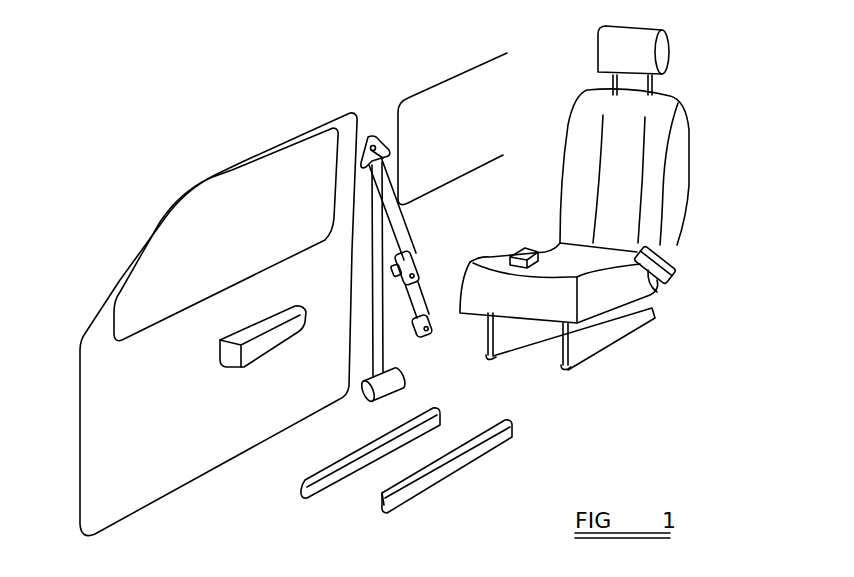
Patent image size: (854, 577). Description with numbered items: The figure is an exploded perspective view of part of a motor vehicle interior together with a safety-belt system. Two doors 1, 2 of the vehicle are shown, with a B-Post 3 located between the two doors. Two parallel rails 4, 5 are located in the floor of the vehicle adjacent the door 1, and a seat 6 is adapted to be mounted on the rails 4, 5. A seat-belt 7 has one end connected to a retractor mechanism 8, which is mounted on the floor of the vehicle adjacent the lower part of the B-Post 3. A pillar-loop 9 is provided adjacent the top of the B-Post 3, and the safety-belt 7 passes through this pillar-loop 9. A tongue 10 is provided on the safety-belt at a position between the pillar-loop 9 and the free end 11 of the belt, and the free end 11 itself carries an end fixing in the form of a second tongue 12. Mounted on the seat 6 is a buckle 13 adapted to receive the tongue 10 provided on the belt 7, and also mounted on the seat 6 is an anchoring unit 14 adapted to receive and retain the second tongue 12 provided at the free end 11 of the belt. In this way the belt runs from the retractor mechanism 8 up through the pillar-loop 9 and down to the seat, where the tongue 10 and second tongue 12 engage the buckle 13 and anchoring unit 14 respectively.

The door 1 is at (130, 415).
The door 2 is at (488, 188).
The B-Post 3 is at (374, 133).
The rail 4 is at (335, 478).
The rail 5 is at (432, 478).
The seat 6 is at (698, 244).
The seat-belt 7 is at (378, 320).
The retractor mechanism 8 is at (379, 399).
The pillar-loop 9 is at (385, 145).
The tongue 10 is at (418, 257).
The free end 11 is at (434, 310).
The second tongue 12 is at (430, 328).
The buckle 13 is at (657, 290).
The anchoring unit 14 is at (516, 247).